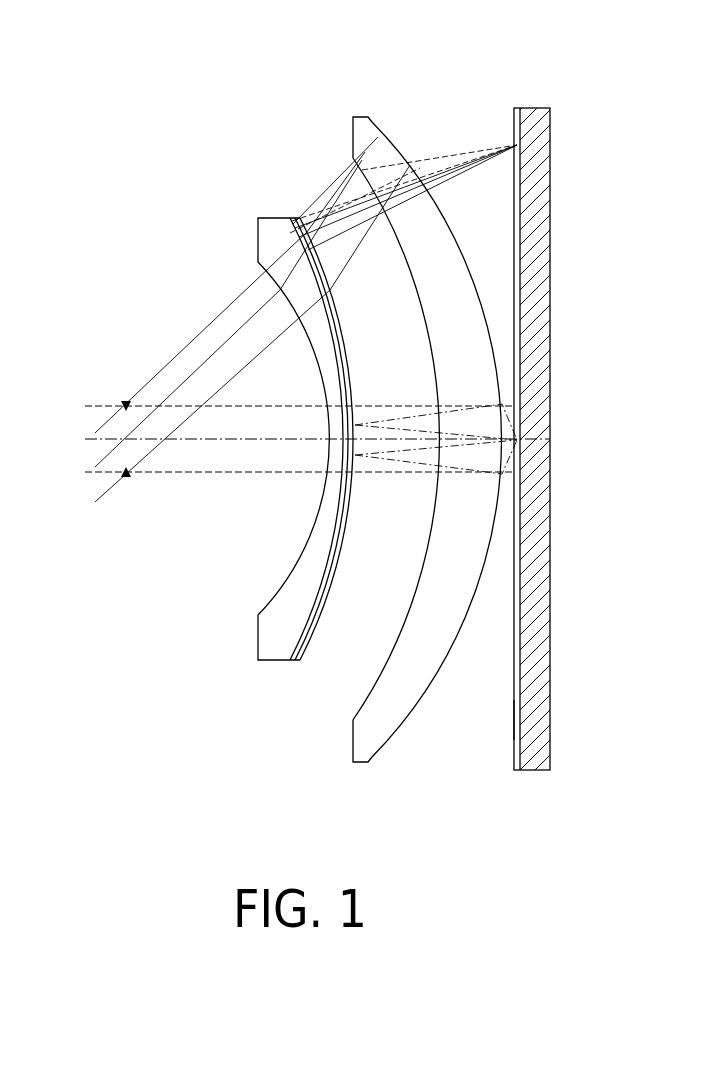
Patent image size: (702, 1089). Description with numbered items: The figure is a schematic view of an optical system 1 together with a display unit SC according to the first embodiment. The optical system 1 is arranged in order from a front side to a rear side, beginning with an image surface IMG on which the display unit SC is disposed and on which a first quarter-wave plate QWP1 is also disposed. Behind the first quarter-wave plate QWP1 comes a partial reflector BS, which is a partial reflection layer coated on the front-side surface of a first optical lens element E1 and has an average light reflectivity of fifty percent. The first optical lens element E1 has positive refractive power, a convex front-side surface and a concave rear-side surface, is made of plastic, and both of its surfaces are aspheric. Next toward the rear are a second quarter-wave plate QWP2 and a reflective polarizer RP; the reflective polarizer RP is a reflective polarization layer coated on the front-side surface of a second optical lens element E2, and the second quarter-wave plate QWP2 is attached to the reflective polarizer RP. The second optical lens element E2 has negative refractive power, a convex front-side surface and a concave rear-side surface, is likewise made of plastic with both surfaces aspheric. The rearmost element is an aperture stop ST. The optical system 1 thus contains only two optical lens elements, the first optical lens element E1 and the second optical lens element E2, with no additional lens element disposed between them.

The optical system 1 is at (68, 68).
The aperture stop ST is at (125, 404).
The second optical lens element E2 is at (274, 232).
The reflective polarizer RP is at (296, 637).
The second quarter-wave plate QWP2 is at (297, 654).
The first optical lens element E1 is at (363, 119).
The partial reflector BS is at (378, 128).
The display unit SC is at (533, 120).
The first quarter-wave plate QWP1 is at (517, 771).
The image surface IMG is at (513, 718).